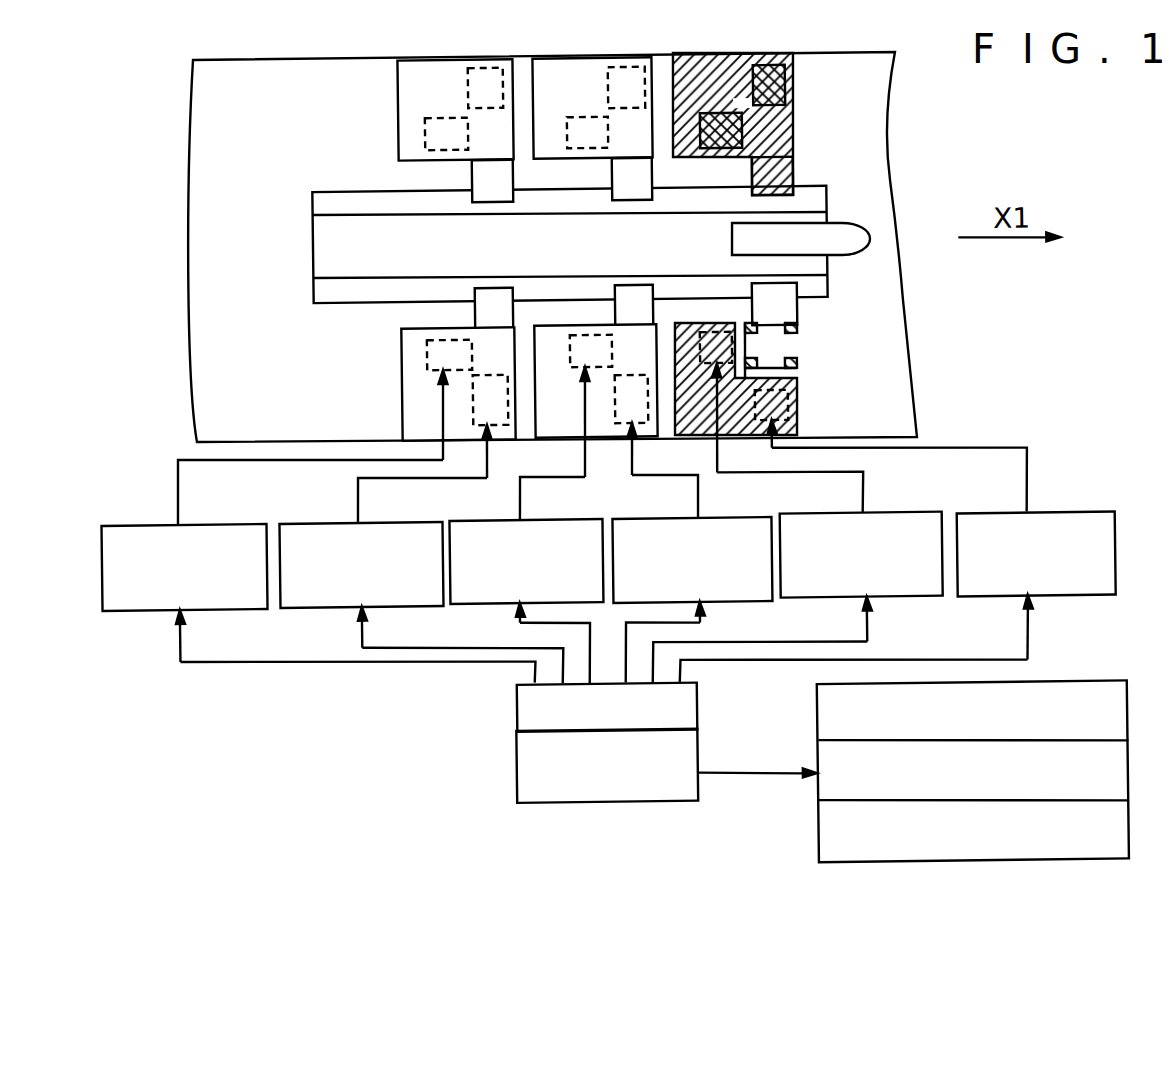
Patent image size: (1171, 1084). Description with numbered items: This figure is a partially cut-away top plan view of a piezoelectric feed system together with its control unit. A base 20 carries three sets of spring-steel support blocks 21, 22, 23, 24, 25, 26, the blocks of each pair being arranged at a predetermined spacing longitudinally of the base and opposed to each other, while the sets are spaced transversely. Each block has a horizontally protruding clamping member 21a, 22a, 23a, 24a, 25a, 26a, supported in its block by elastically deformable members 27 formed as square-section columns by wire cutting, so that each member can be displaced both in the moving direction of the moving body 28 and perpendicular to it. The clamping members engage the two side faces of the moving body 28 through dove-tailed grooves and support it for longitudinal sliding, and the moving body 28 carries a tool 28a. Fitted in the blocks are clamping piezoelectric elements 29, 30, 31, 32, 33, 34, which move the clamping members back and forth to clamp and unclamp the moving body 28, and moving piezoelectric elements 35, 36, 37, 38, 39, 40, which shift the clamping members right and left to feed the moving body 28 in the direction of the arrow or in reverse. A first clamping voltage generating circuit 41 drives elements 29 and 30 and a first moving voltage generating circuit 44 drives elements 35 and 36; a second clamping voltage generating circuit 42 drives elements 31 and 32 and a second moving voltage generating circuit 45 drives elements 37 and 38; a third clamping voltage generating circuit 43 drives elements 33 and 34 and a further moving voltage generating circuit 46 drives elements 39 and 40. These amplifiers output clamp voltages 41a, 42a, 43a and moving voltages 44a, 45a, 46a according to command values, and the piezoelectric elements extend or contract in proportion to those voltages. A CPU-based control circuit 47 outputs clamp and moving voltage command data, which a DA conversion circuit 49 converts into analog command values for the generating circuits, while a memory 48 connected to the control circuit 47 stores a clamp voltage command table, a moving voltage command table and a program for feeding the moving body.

The base 20 is at (241, 78).
The support block 21 is at (792, 420).
The clamping member 21a is at (793, 308).
The support block 22 is at (731, 64).
The clamping member 22a is at (798, 150).
The support block 23 is at (555, 433).
The clamping member 23a is at (638, 286).
The support block 24 is at (562, 70).
The clamping member 24a is at (639, 198).
The support block 25 is at (404, 392).
The clamping member 25a is at (490, 287).
The support block 26 is at (426, 70).
The clamping member 26a is at (496, 199).
The elastically deformable members 27 is at (791, 332).
The moving body 28 is at (339, 199).
The tool 28a is at (862, 227).
The clamping piezoelectric element 29 is at (797, 390).
The clamping piezoelectric element 30 is at (794, 74).
The clamping piezoelectric element 31 is at (620, 425).
The clamping piezoelectric element 32 is at (636, 67).
The clamping piezoelectric element 33 is at (477, 421).
The clamping piezoelectric element 34 is at (494, 69).
The moving piezoelectric element 35 is at (722, 336).
The moving piezoelectric element 36 is at (718, 115).
The moving piezoelectric element 37 is at (572, 338).
The moving piezoelectric element 38 is at (590, 130).
The moving piezoelectric element 39 is at (427, 348).
The moving piezoelectric element 40 is at (430, 131).
The first clamping voltage generating circuit 41 is at (998, 517).
The clamp voltage 41a is at (1031, 480).
The second clamping voltage generating circuit 42 is at (734, 604).
The clamp voltage 42a is at (699, 495).
The third clamping voltage generating circuit 43 is at (300, 520).
The clamp voltage 43a is at (358, 494).
The first moving voltage generating circuit 44 is at (915, 517).
The moving voltage 44a is at (864, 497).
The second moving voltage generating circuit 45 is at (469, 602).
The moving voltage 45a is at (521, 494).
The moving voltage generating circuit 46 is at (230, 507).
The moving voltage 46a is at (179, 485).
The control circuit 47 is at (514, 758).
The memory 48 is at (1070, 688).
The DA conversion circuit 49 is at (698, 695).